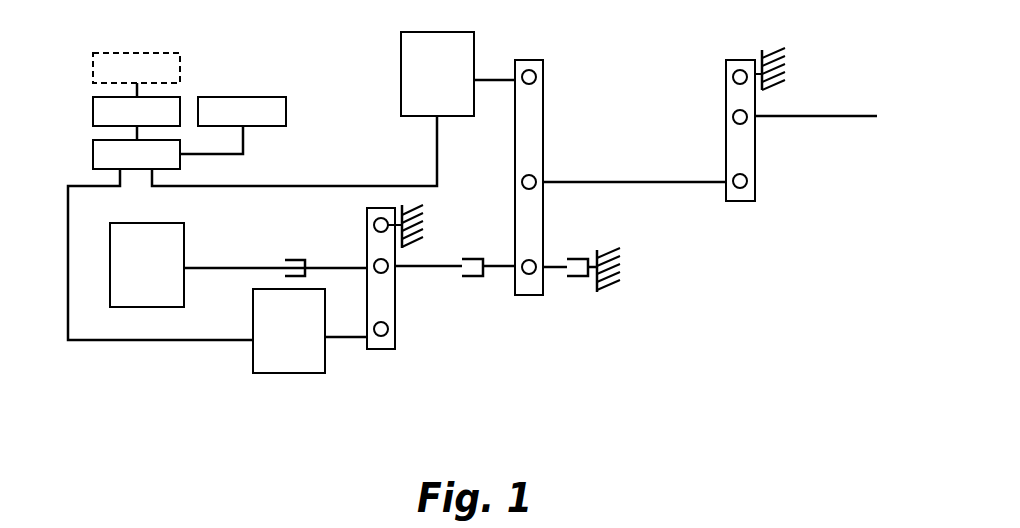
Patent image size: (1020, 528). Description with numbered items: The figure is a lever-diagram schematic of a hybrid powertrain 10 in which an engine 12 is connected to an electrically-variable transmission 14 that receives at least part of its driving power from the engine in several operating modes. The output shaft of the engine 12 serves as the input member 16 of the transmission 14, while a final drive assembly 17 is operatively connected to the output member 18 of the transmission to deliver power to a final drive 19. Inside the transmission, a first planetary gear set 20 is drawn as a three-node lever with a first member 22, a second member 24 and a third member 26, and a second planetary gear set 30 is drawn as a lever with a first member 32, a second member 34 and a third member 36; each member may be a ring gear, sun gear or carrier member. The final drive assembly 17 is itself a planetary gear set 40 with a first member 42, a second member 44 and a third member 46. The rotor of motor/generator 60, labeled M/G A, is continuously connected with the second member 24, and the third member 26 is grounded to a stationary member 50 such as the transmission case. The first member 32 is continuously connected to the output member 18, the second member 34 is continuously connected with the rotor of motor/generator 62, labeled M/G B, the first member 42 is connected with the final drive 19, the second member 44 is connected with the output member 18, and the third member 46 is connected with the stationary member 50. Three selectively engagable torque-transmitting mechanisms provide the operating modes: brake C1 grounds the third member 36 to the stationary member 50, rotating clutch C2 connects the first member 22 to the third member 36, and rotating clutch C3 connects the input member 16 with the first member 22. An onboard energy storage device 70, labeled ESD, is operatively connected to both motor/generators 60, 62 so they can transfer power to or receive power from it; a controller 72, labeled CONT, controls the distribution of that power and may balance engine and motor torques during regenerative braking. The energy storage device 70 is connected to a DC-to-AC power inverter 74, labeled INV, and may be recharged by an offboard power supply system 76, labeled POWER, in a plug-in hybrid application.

The hybrid powertrain 10 is at (846, 57).
The engine 12 is at (147, 265).
The electrically-variable transmission 14 is at (310, 73).
The input member 16 is at (208, 268).
The final drive assembly 17 is at (703, 71).
The output member 18 is at (668, 183).
The final drive 19 is at (840, 117).
The first planetary gear set 20 is at (396, 312).
The first member 22 is at (375, 260).
The second member 24 is at (378, 349).
The third member 26 is at (381, 217).
The second planetary gear set 30 is at (543, 97).
The first member 32 is at (543, 180).
The second member 34 is at (529, 70).
The third member 36 is at (529, 275).
The planetary gear set 40 is at (726, 100).
The first member 42 is at (748, 120).
The second member 44 is at (748, 184).
The third member 46 is at (740, 70).
The stationary member 50 is at (420, 212).
The motor/generator 60 is at (289, 373).
The motor/generator 62 is at (401, 80).
The energy storage device 70 is at (93, 107).
The controller 72 is at (243, 97).
The power inverter 74 is at (93, 150).
The offboard power supply system 76 is at (131, 52).
The brake C1 is at (584, 249).
The clutch C2 is at (487, 249).
The clutch C3 is at (292, 249).